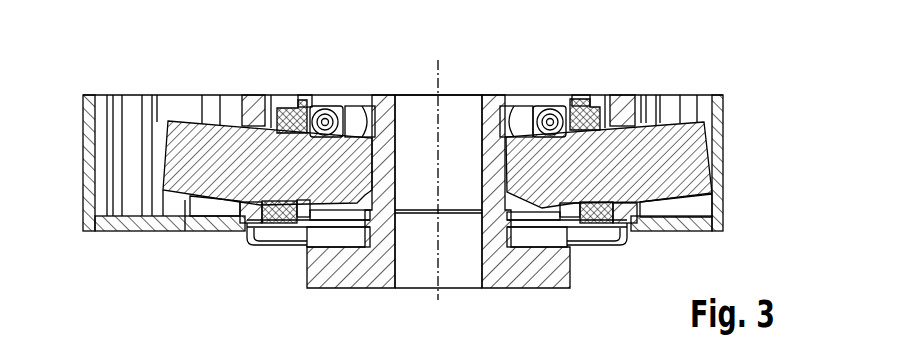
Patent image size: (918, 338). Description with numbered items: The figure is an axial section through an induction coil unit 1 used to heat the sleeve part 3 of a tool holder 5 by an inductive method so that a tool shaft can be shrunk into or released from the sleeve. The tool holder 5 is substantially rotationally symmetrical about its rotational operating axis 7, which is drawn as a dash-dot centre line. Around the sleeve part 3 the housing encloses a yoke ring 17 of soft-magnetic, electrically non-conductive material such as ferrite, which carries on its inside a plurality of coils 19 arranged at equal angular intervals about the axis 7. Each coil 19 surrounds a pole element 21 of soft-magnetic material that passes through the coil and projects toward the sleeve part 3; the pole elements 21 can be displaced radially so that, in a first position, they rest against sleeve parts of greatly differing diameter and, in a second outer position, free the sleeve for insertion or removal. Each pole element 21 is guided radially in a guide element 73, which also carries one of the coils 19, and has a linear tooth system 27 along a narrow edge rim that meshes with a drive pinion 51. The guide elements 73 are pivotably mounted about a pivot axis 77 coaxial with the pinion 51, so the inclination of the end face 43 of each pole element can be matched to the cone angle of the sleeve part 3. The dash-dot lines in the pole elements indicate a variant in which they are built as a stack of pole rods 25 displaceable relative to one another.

The induction coil unit 1 is at (747, 137).
The sleeve part 3 is at (388, 95).
The tool holder 5 is at (522, 268).
The axis 7 is at (440, 60).
The yoke ring 17 is at (244, 96).
The coils 19 is at (283, 103).
The pole element 21 is at (178, 122).
The pole rods 25 is at (168, 119).
The linear tooth system 27 is at (206, 122).
The end face 43 is at (396, 152).
The drive pinion 51 is at (333, 114).
The guide element 73 is at (302, 95).
The pivot axis 77 is at (337, 108).